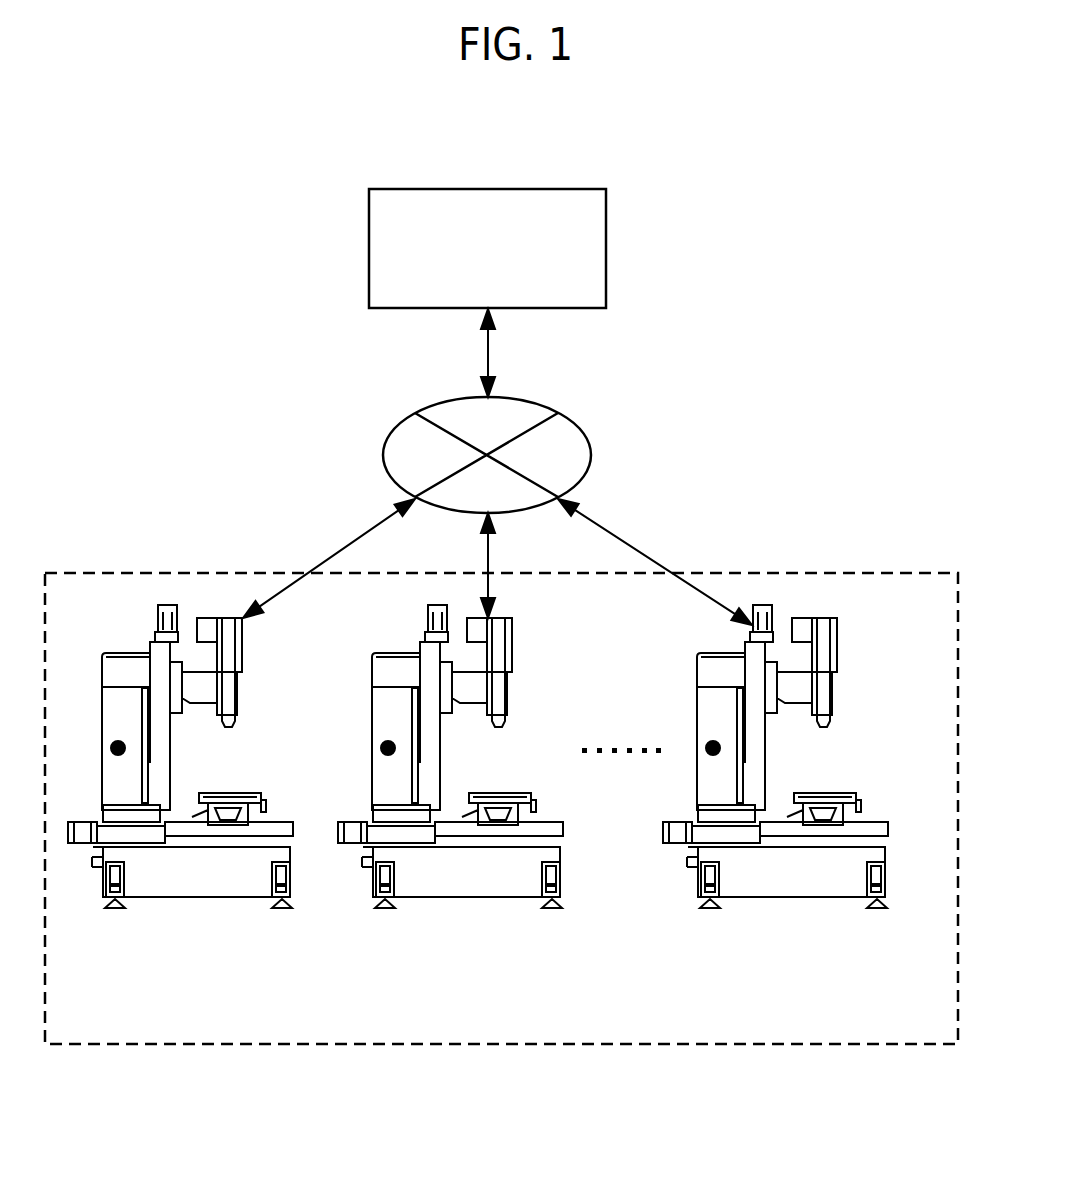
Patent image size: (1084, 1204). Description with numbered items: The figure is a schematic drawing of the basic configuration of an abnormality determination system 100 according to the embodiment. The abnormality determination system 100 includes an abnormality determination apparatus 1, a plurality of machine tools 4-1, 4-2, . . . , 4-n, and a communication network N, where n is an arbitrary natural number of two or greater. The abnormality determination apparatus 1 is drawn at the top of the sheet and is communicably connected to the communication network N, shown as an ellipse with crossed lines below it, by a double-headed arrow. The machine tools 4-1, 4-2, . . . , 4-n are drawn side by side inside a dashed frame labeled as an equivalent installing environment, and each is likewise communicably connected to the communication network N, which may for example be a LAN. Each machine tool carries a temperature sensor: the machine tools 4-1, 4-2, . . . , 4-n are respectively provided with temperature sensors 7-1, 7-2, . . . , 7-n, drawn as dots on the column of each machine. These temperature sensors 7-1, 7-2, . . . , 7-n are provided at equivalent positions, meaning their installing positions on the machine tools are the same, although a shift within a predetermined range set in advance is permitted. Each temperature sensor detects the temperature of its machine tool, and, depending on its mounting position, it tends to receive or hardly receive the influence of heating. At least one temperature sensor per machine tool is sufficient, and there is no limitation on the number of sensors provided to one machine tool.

The abnormality determination apparatus 1 is at (561, 188).
The abnormality determination system 100 is at (856, 219).
The communication network N is at (572, 418).
The machine tool 4-1 is at (180, 795).
The machine tool 4-2 is at (450, 795).
The machine tool 4-n is at (775, 795).
The temperature sensor 7-1 is at (126, 750).
The temperature sensor 7-2 is at (443, 752).
The temperature sensor 7-n is at (768, 752).